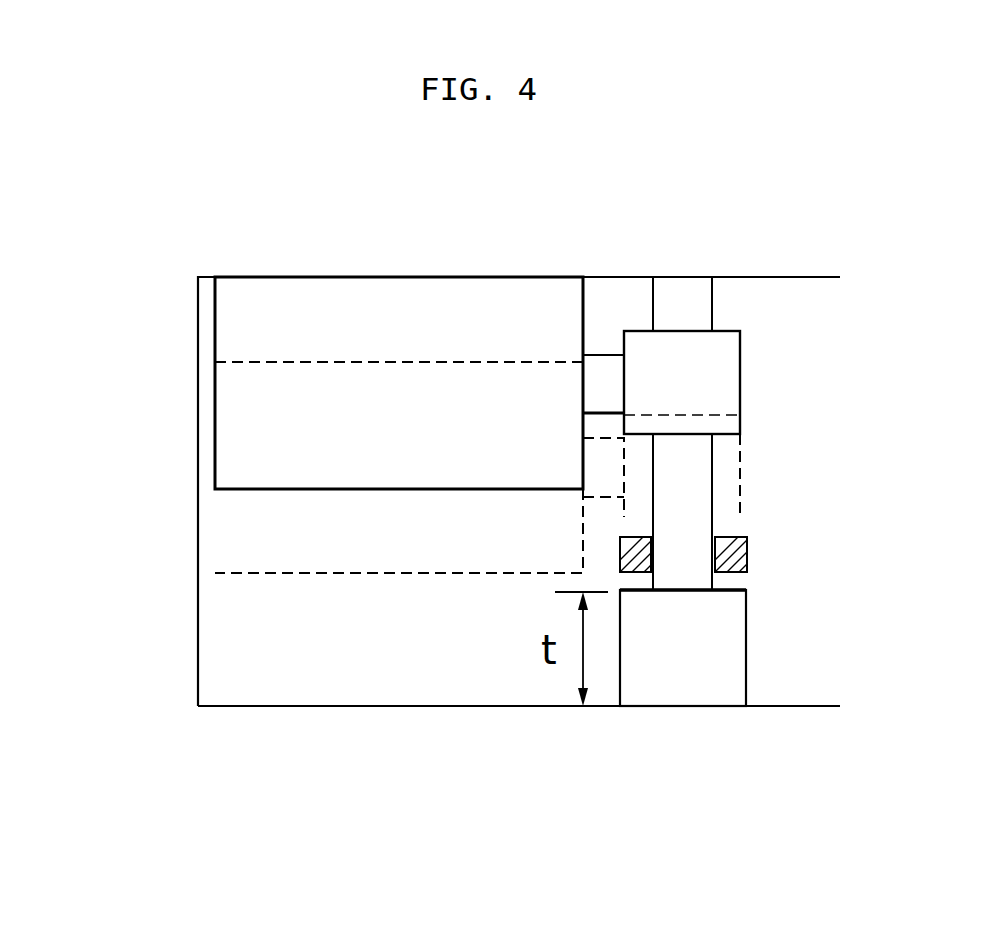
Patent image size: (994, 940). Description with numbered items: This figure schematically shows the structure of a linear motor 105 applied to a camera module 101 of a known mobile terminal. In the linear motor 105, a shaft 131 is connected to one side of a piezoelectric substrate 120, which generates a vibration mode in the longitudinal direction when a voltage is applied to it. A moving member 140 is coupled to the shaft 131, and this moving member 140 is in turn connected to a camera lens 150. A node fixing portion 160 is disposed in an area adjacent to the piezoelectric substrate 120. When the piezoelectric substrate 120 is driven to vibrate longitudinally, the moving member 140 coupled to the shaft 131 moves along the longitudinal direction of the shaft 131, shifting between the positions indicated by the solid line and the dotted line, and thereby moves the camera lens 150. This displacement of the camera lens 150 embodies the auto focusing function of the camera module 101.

The camera module 101 is at (150, 224).
The linear motor 105 is at (790, 403).
The piezoelectric substrate 120 is at (688, 690).
The shaft 131 is at (697, 310).
The moving member 140 is at (722, 370).
The camera lens 150 is at (226, 432).
The node fixing portion 160 is at (617, 552).